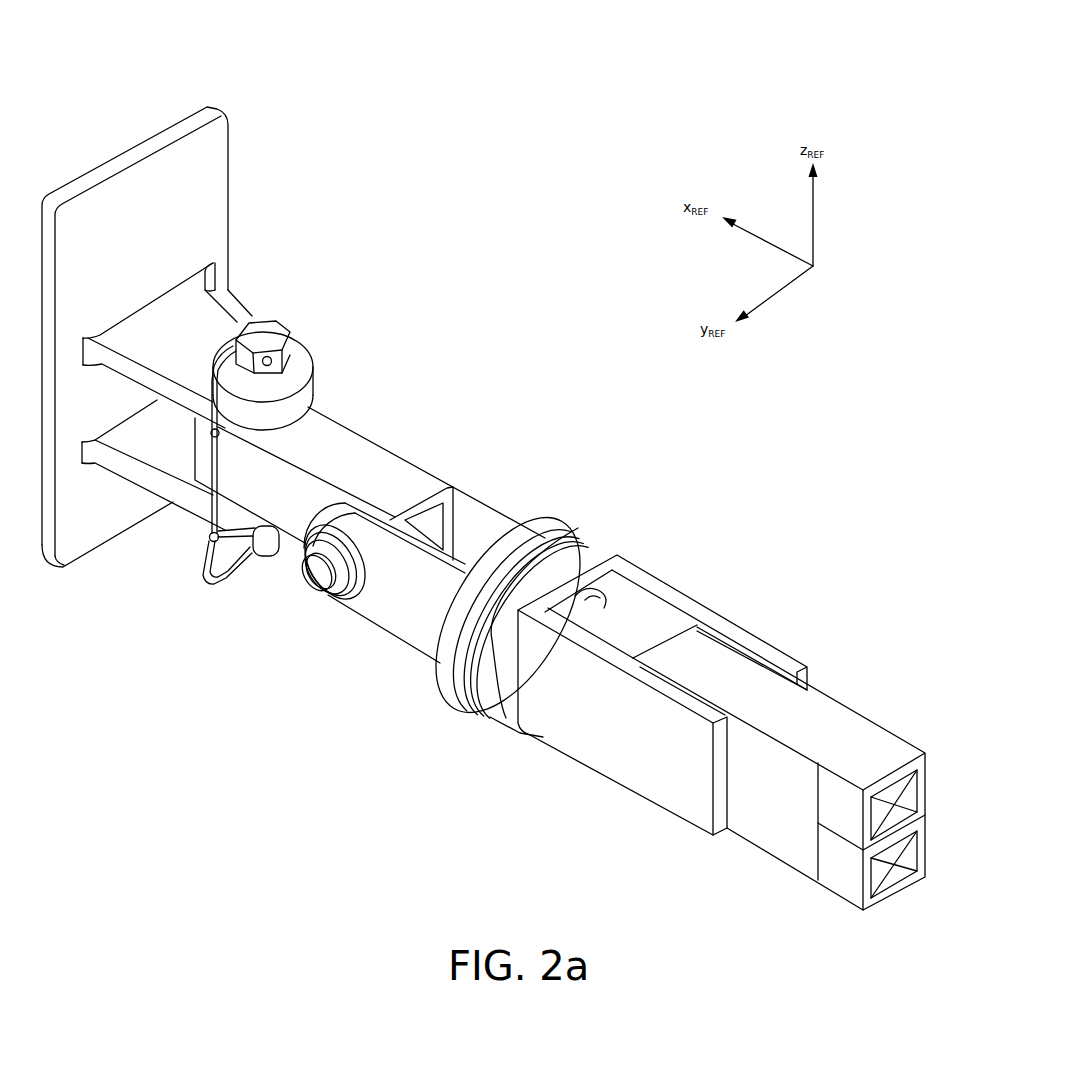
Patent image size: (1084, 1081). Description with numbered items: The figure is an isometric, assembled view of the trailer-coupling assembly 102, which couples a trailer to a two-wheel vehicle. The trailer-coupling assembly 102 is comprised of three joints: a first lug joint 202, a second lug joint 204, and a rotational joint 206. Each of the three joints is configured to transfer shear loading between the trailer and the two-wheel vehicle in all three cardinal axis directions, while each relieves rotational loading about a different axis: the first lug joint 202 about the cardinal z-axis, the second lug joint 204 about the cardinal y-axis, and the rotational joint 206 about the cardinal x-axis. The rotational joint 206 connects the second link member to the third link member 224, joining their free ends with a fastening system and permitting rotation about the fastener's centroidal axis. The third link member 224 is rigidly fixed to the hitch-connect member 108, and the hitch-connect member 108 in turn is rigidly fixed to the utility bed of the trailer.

The trailer-coupling assembly 102 is at (755, 55).
The first lug joint 202 is at (290, 328).
The second lug joint 204 is at (460, 468).
The rotational joint 206 is at (581, 526).
The third link member 224 is at (573, 748).
The hitch-connect member 108 is at (835, 690).